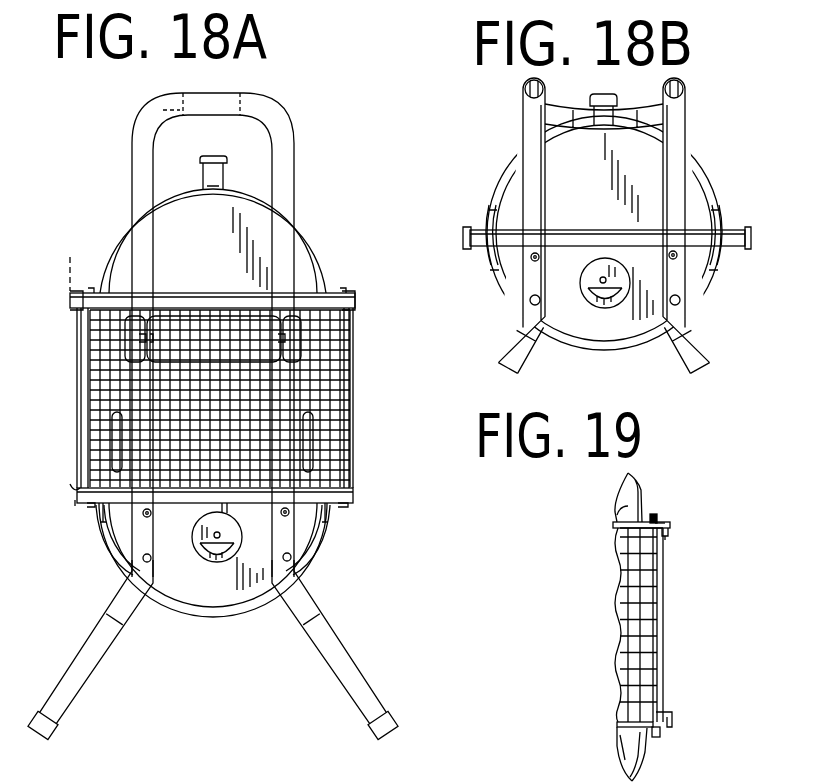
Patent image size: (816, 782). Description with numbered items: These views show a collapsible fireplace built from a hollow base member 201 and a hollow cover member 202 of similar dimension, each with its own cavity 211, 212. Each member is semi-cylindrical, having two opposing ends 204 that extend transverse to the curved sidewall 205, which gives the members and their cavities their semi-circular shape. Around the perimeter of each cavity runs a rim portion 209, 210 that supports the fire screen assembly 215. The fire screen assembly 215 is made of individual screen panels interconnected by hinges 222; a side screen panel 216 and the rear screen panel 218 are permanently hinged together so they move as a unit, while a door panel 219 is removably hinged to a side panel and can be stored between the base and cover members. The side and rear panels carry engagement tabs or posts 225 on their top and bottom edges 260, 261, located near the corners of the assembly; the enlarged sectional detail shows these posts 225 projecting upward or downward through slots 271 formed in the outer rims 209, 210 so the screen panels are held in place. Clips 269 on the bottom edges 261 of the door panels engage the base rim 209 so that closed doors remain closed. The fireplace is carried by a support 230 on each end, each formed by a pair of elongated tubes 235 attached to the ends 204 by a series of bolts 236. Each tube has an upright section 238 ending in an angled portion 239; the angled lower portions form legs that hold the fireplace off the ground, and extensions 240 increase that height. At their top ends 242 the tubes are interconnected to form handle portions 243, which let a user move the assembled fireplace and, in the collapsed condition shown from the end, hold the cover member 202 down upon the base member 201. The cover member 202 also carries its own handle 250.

In FIG. 18A, the base member 201 is at (322, 547).
In FIG. 18B, the base member 201 is at (635, 323).
In FIG. 19, the base member 201 is at (613, 768).
In FIG. 18A, the cover member 202 is at (316, 255).
In FIG. 18B, the cover member 202 is at (648, 172).
In FIG. 19, the cover member 202 is at (640, 477).
In FIG. 18A, the ends 204 is at (232, 266).
In FIG. 18B, the ends 204 is at (602, 191).
In FIG. 18A, the curved sidewall 205 is at (300, 230).
In FIG. 18B, the curved sidewall 205 is at (593, 348).
In FIG. 19, the curved sidewall 205 is at (638, 483).
In FIG. 19, the rim portion of base member 209 is at (673, 723).
In FIG. 19, the rim portion of cover member 210 is at (668, 527).
In FIG. 19, the cavity of base member 211 is at (623, 740).
In FIG. 19, the cavity of cover member 212 is at (620, 492).
In FIG. 18A, the fire screen assembly 215 is at (350, 400).
In FIG. 19, the fire screen assembly 215 is at (688, 568).
In FIG. 18A, the side screen panel 216 is at (331, 443).
In FIG. 19, the side screen panel 216 is at (660, 550).
In FIG. 18A, the rear screen panel 218 is at (351, 345).
In FIG. 19, the rear screen panel 218 is at (667, 617).
In FIG. 18A, the door panel 219 is at (82, 381).
In FIG. 18A, the hinges 222 is at (346, 292).
In FIG. 19, the engagement tabs or posts 225 is at (658, 516).
In FIG. 18A, the support 230 is at (292, 485).
In FIG. 18B, the support 230 is at (685, 207).
In FIG. 18B, the elongated tubes 235 is at (530, 127).
In FIG. 18A, the bolts 236 is at (145, 517).
In FIG. 18B, the bolts 236 is at (532, 258).
In FIG. 18A, the upright section 238 is at (290, 532).
In FIG. 18B, the upright section 238 is at (533, 193).
In FIG. 18A, the angled portion 239 is at (322, 605).
In FIG. 18B, the angled portion 239 is at (512, 342).
In FIG. 18A, the extensions 240 is at (106, 658).
In FIG. 18A, the top ends 242 is at (283, 113).
In FIG. 18A, the handle portions 243 is at (230, 103).
In FIG. 18B, the handle portions 243 is at (604, 116).
In FIG. 18A, the handle 250 is at (213, 152).
In FIG. 18B, the handle 250 is at (602, 90).
In FIG. 18A, the top edges 260 is at (70, 257).
In FIG. 19, the top edges 260 is at (614, 518).
In FIG. 18A, the bottom edges 261 is at (75, 500).
In FIG. 19, the bottom edges 261 is at (636, 722).
In FIG. 18A, the clips 269 is at (78, 487).
In FIG. 19, the slots 271 is at (657, 524).